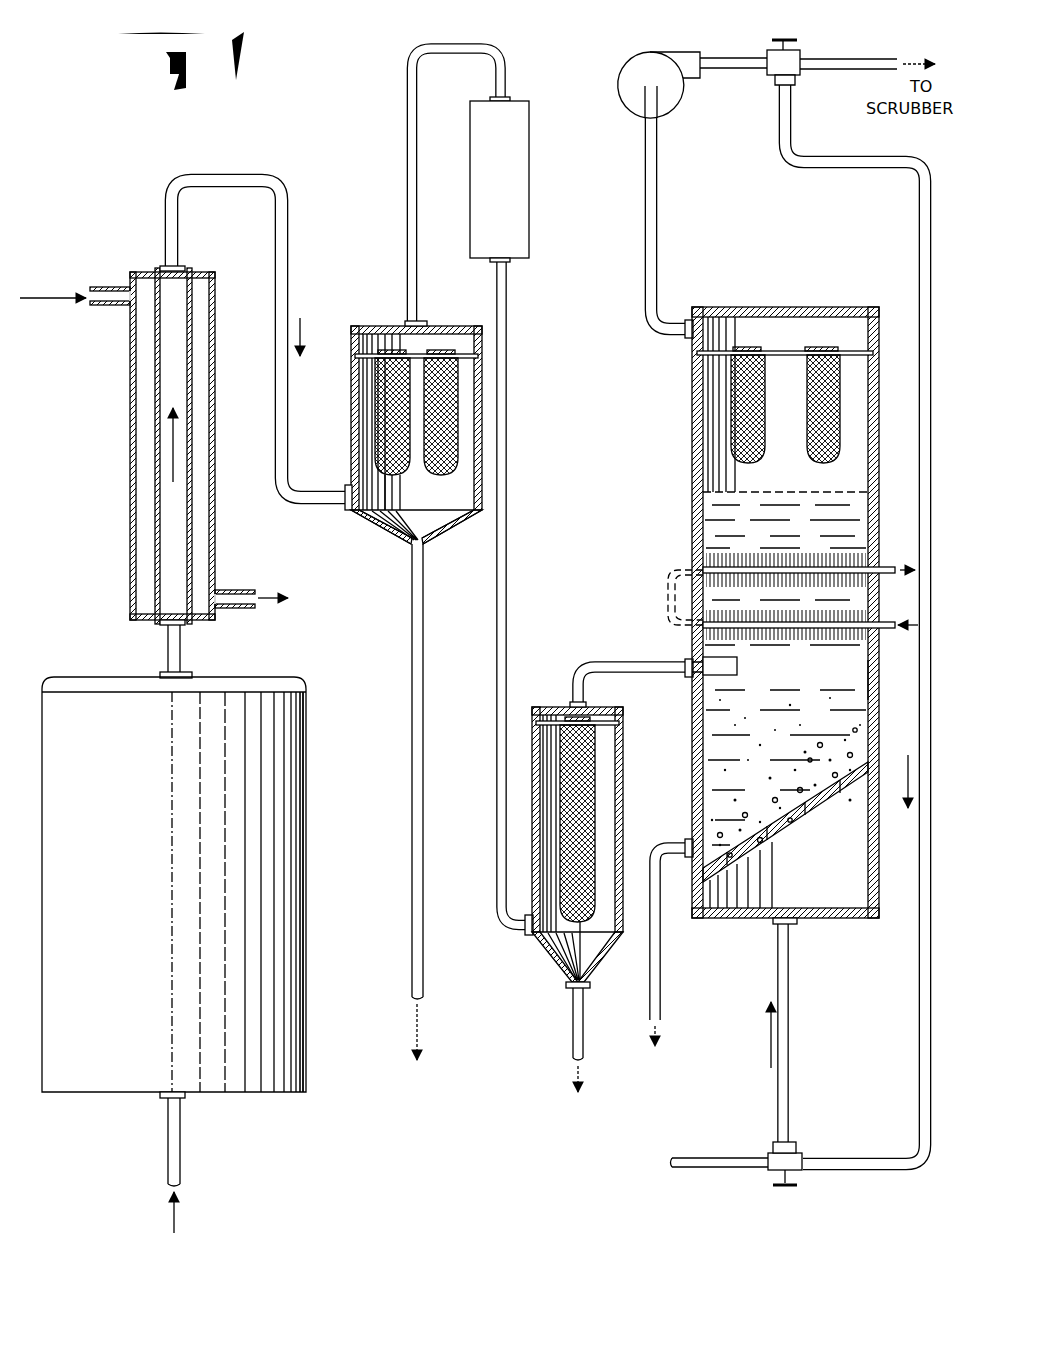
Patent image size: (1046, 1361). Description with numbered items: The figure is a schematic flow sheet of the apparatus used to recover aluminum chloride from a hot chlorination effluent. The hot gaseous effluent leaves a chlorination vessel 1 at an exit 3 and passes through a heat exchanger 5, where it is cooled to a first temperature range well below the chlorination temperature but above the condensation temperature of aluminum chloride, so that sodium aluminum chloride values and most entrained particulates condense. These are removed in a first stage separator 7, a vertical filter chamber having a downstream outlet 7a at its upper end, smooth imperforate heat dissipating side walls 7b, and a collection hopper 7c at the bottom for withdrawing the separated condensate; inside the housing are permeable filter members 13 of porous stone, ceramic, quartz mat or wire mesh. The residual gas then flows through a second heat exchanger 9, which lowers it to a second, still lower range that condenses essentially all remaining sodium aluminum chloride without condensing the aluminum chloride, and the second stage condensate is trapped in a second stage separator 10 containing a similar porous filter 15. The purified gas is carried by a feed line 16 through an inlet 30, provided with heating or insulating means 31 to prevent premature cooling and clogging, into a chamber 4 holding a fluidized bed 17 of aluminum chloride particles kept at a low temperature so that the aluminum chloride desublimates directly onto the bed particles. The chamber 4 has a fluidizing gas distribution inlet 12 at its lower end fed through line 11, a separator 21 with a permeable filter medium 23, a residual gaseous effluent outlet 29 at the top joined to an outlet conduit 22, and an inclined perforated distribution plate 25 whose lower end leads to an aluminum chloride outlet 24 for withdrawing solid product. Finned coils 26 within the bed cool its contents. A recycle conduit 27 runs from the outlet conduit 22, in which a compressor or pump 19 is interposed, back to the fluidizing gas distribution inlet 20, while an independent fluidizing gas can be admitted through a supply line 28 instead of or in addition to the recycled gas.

The chlorination vessel 1 is at (290, 950).
The effluent exit 3 is at (190, 675).
The fluidized bed chamber 4 is at (873, 690).
The heat exchanger 5 is at (163, 520).
The first stage separator 7 is at (428, 671).
The downstream outlet 7a is at (410, 324).
The perimetric side walls 7b is at (366, 432).
The collection hopper 7c is at (392, 535).
The second heat exchanger 9 is at (520, 186).
The second stage separator 10 is at (554, 922).
The fluidizing gas line 11 is at (498, 78).
The fluidizing gas distribution inlet 12 is at (782, 920).
The permeable filter members 13 is at (455, 420).
The filter 15 is at (597, 785).
The feed line 16 is at (593, 663).
The fluidized bed 17 is at (822, 732).
The compressor or pump 19 is at (643, 62).
The fluidizing gas distribution inlet 20 is at (762, 840).
The separator 21 is at (770, 600).
The outlet conduit 22 is at (650, 205).
The permeable filter medium 23 is at (733, 403).
The aluminum chloride outlet 24 is at (692, 843).
The inclined perforated distribution plate 25 is at (822, 805).
The finned coils 26 is at (730, 563).
The recycle conduit 27 is at (922, 218).
The supply line 28 is at (733, 1165).
The residual gaseous effluent outlet 29 is at (720, 325).
The inlet 30 is at (690, 660).
The temperature maintaining means 31 is at (718, 668).